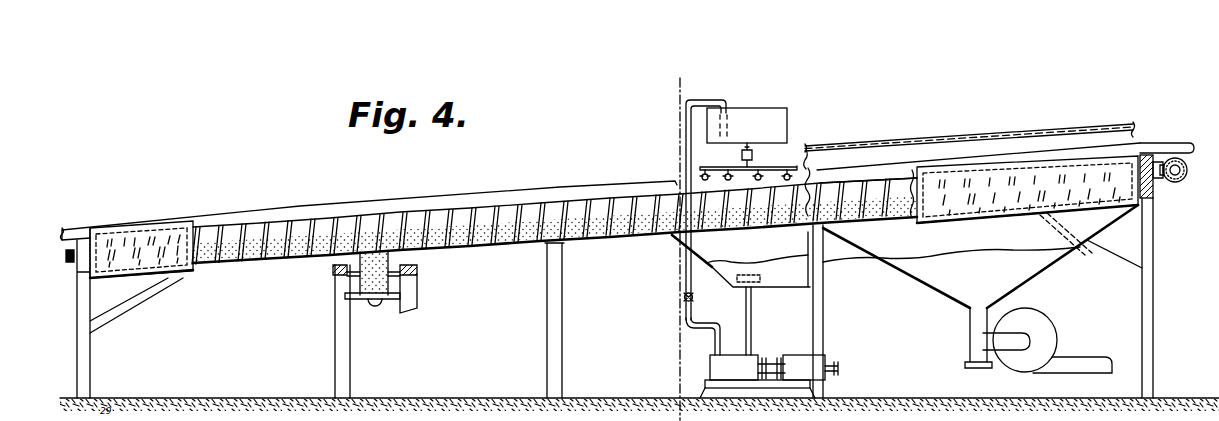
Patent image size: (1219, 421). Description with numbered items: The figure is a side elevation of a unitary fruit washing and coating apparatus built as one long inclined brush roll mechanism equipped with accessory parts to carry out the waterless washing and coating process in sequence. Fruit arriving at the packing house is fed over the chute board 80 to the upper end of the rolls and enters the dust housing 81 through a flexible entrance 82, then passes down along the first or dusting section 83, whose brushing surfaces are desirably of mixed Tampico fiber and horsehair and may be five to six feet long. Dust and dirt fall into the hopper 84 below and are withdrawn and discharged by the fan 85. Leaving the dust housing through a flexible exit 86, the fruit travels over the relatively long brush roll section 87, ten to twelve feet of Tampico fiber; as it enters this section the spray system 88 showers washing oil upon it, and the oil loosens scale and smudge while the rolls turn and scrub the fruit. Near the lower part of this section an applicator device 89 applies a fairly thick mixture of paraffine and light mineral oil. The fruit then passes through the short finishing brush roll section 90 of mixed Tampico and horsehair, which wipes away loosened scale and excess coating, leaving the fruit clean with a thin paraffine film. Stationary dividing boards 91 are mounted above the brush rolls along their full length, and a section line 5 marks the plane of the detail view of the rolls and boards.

The section line 5 is at (680, 82).
The chute board 80 is at (1180, 142).
The dust housing 81 is at (915, 143).
The flexible entrance 82 is at (1134, 145).
The dusting section 83 is at (891, 178).
The hopper 84 is at (912, 277).
The fan 85 is at (1048, 333).
The flexible exit 86 is at (821, 182).
The brush roll section 87 is at (297, 222).
The spray system 88 is at (750, 130).
The applicator device 89 is at (368, 282).
The finishing brush roll section 90 is at (243, 222).
The dividing board 91 is at (372, 201).